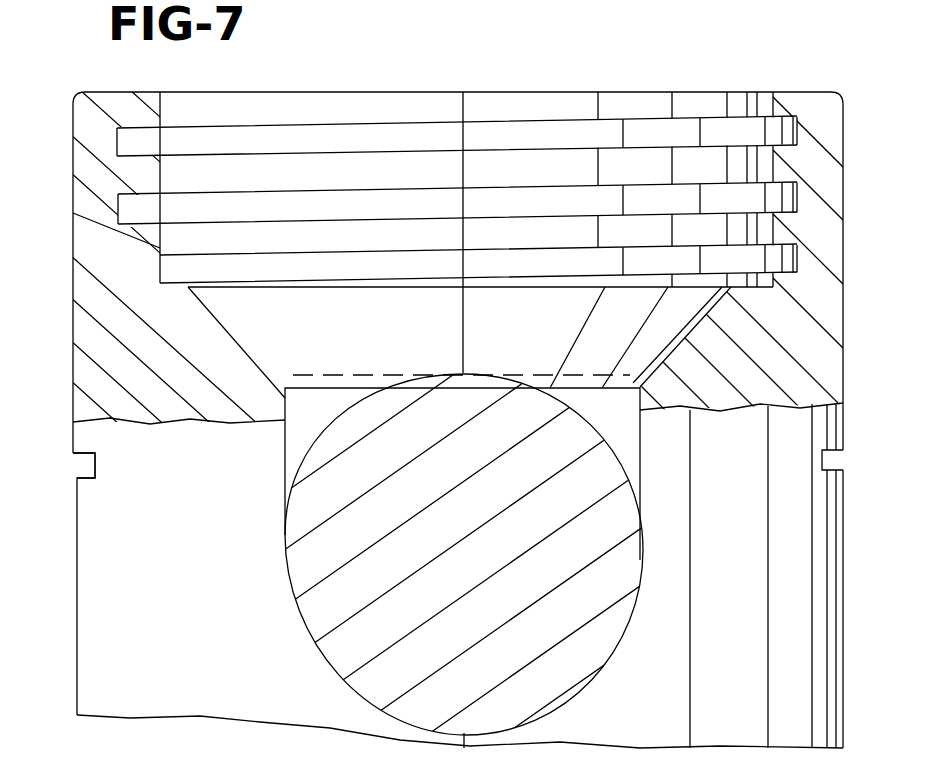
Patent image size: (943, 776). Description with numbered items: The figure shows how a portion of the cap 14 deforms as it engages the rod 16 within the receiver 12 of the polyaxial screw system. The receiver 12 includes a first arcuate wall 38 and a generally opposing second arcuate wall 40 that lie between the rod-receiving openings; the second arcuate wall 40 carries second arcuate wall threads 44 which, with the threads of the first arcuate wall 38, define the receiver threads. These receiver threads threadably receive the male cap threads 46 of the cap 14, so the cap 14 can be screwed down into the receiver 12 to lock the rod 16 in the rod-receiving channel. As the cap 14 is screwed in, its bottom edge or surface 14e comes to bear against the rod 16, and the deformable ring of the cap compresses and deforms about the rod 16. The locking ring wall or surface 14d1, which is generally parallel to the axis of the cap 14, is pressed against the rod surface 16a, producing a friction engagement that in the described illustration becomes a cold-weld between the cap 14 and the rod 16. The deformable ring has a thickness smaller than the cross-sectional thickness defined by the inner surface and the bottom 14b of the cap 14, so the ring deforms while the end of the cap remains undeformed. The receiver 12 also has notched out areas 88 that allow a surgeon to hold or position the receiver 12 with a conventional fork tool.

The receiver 12 is at (72, 215).
The cap 14 is at (481, 91).
The bottom 14b is at (247, 347).
The locking ring wall or surface 14d1 is at (632, 395).
The bottom edge or surface 14e is at (310, 396).
The rod 16 is at (300, 612).
The rod surface 16a is at (478, 374).
The first arcuate wall 38 is at (796, 92).
The second arcuate wall 40 is at (122, 88).
The second arcuate wall threads 44 is at (160, 165).
The male cap threads 46 is at (799, 243).
The notched out areas 88 is at (83, 465).